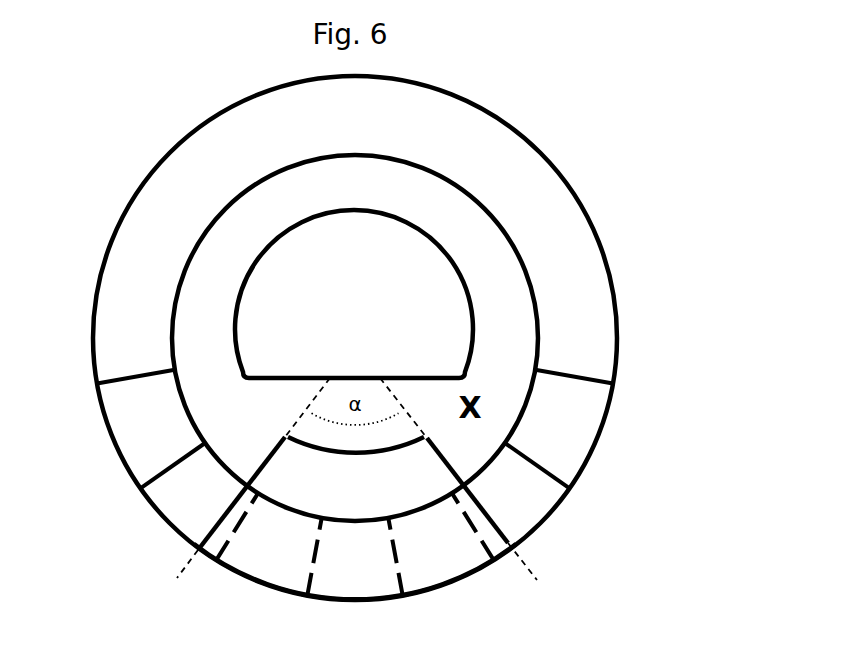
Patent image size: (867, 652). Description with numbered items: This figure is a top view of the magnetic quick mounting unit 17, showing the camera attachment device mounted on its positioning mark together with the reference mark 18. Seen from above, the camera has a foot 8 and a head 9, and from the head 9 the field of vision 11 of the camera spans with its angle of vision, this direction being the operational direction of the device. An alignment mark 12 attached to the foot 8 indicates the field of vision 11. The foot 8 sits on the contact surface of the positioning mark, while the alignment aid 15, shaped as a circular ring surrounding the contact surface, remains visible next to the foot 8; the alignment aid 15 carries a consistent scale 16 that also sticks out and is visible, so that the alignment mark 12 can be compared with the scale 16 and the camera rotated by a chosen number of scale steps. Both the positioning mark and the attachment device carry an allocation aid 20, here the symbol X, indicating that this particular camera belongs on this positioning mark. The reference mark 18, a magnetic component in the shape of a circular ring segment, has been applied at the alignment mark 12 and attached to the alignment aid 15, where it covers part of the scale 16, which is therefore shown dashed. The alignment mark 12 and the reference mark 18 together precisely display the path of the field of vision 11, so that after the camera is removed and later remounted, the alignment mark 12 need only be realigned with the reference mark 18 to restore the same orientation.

The foot 8 is at (323, 190).
The head 9 is at (300, 292).
The field of vision 11 is at (310, 427).
The alignment mark 12 is at (293, 483).
The alignment aid 15 is at (595, 342).
The scale 16 is at (577, 380).
The magnetic quick mounting unit 17 is at (569, 157).
The reference mark 18 is at (433, 557).
The allocation aid 20 is at (505, 419).